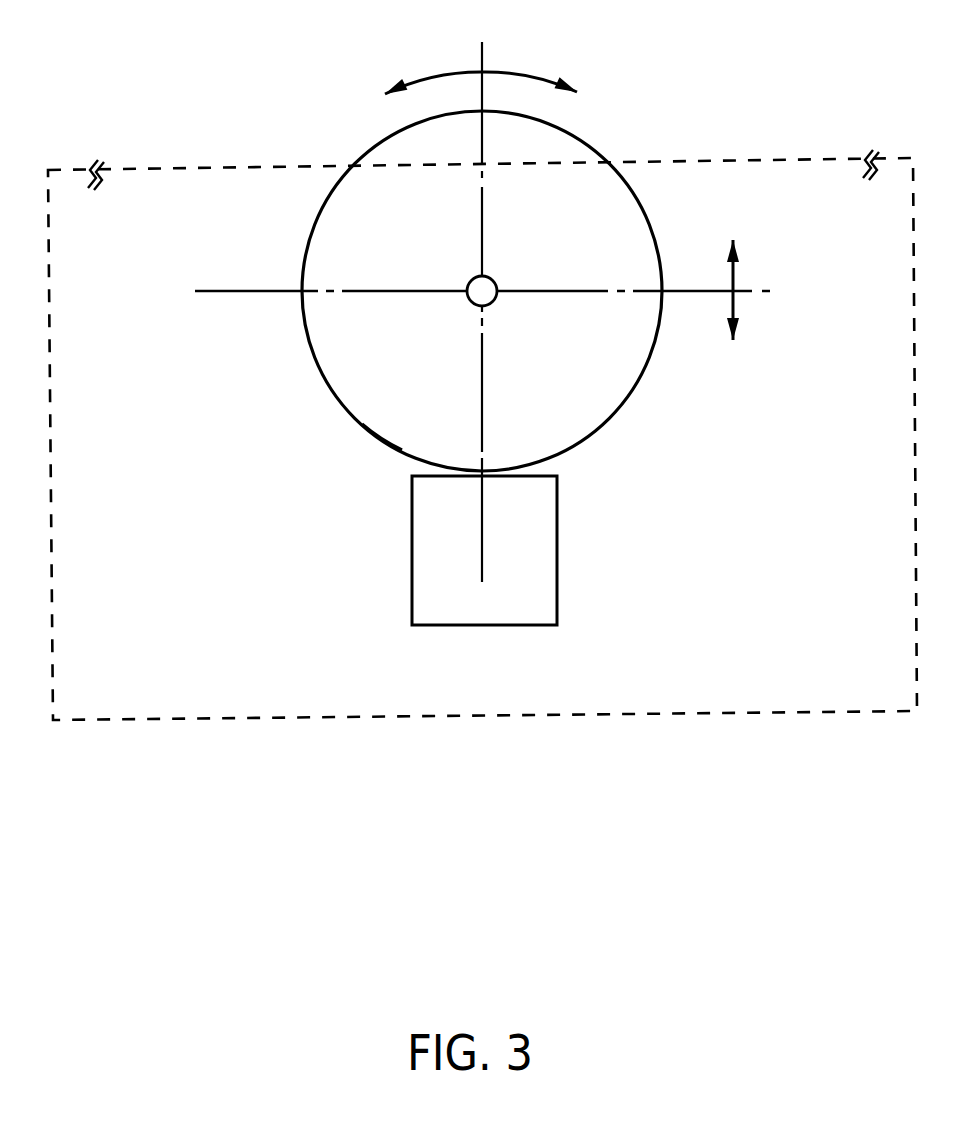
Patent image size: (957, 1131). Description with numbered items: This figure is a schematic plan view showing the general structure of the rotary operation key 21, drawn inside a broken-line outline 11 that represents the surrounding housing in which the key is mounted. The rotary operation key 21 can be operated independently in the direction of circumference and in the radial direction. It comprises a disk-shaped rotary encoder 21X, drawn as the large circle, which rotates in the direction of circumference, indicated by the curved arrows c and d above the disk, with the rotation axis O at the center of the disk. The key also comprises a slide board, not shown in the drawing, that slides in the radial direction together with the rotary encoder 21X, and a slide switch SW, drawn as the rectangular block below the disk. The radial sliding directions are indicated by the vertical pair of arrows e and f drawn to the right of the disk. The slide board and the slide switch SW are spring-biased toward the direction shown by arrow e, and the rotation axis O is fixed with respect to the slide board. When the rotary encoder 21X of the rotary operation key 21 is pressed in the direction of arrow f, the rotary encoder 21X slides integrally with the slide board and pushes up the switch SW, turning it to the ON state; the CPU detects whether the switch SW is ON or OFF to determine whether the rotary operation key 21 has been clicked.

The housing 11 is at (158, 165).
The rotary operation key 21 is at (618, 123).
The rotary encoder 21X is at (357, 418).
The rotation axis O is at (495, 278).
The slide switch SW is at (557, 570).
The arrow c is at (521, 70).
The arrow d is at (448, 70).
The arrow e is at (738, 272).
The arrow f is at (738, 305).